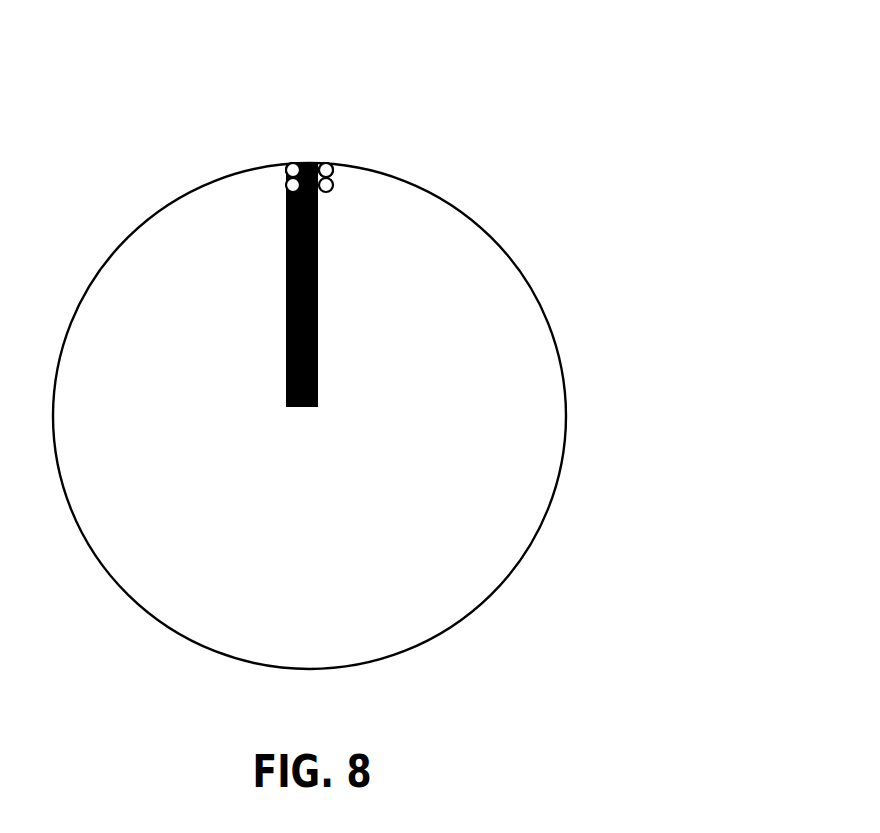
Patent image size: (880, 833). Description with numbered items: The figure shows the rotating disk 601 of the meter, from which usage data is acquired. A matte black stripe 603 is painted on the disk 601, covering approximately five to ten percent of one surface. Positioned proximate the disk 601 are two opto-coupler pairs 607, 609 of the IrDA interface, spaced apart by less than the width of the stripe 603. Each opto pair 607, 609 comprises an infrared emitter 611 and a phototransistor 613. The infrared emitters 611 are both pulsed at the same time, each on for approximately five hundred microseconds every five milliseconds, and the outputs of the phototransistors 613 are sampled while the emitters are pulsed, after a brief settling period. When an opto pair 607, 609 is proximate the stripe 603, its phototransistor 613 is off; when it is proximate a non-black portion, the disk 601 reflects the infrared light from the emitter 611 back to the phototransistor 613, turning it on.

The rotating disk 601 is at (533, 343).
The matte black stripe 603 is at (318, 358).
The opto-coupler pair 607 is at (333, 168).
The opto-coupler pair 609 is at (287, 167).
The infrared emitter 611 is at (288, 191).
The phototransistor 613 is at (319, 164).